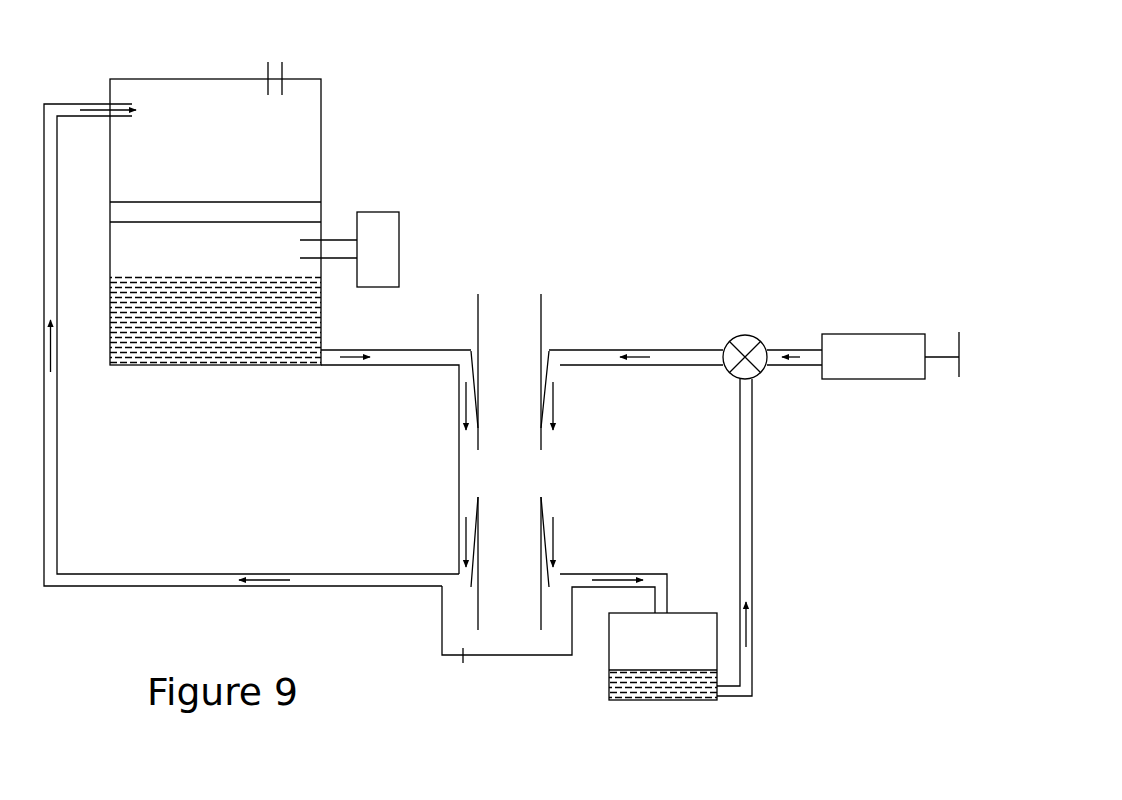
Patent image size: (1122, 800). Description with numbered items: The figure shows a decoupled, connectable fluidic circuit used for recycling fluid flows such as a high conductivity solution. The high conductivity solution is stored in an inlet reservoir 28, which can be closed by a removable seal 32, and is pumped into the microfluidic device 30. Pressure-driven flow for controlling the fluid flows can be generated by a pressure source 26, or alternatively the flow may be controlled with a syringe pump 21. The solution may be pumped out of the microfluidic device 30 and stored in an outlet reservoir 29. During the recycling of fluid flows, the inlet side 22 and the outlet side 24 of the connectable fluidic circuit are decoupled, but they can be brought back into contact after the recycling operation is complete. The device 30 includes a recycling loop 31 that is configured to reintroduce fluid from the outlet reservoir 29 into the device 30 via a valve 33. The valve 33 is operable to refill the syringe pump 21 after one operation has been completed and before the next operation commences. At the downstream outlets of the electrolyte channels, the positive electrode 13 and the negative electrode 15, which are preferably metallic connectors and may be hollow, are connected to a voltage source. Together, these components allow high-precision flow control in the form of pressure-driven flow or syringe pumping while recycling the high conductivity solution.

The positive electrode 13 is at (497, 618).
The negative electrode 15 is at (418, 595).
The syringe pump 21 is at (900, 378).
The inlet side 22 is at (459, 393).
The outlet side 24 is at (459, 535).
The pressure source 26 is at (389, 256).
The inlet reservoir 28 is at (322, 134).
The outlet reservoir 29 is at (668, 702).
The microfluidic device 30 is at (510, 303).
The recycling loop 31 is at (745, 482).
The removable seal 32 is at (315, 212).
The valve 33 is at (733, 326).